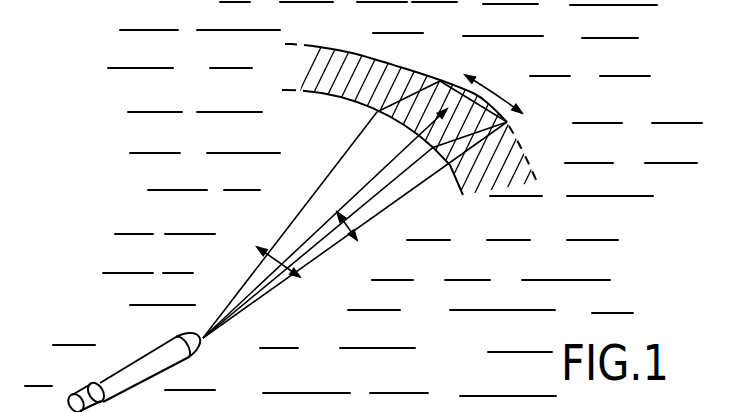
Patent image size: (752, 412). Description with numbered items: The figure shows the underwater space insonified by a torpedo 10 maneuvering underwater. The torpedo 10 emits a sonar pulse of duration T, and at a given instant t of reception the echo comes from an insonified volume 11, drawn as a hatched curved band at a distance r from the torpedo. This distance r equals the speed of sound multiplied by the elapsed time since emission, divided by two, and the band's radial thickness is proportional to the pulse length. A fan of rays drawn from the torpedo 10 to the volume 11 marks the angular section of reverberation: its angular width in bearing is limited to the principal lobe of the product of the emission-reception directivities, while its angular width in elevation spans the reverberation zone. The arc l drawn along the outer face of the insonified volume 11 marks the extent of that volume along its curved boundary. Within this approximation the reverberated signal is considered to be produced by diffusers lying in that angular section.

The torpedo 10 is at (143, 370).
The insonified volume 11 is at (340, 62).
The distance r is at (357, 170).
The arc length along the wall l is at (493, 88).